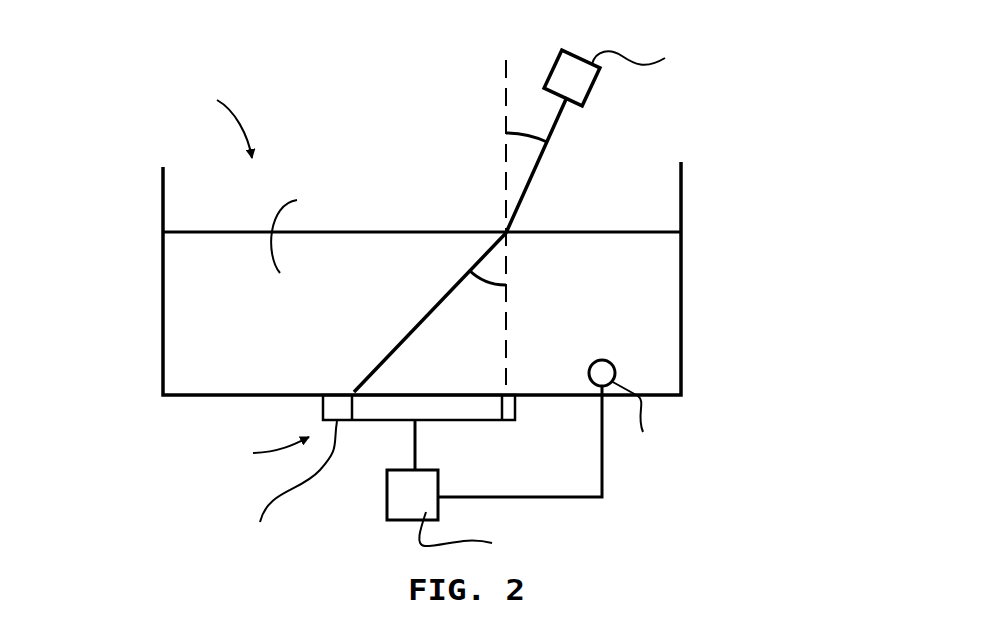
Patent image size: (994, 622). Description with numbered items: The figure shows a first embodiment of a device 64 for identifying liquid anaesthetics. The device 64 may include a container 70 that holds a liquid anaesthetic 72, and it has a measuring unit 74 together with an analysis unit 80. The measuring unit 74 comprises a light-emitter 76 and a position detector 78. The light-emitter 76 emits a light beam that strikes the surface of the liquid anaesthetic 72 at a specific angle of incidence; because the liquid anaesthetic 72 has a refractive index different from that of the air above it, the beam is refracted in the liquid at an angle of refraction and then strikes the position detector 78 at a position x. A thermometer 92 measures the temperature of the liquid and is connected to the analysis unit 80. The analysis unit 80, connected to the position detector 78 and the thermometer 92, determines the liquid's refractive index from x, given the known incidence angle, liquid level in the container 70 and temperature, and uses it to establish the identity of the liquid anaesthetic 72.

The device 64 is at (327, 119).
The container 70 is at (683, 186).
The liquid anaesthetic 72 is at (642, 322).
The measuring unit 74 is at (350, 458).
The light-emitter 76 is at (593, 97).
The position detector 78 is at (440, 422).
The analysis unit 80 is at (494, 457).
The thermometer 92 is at (615, 373).